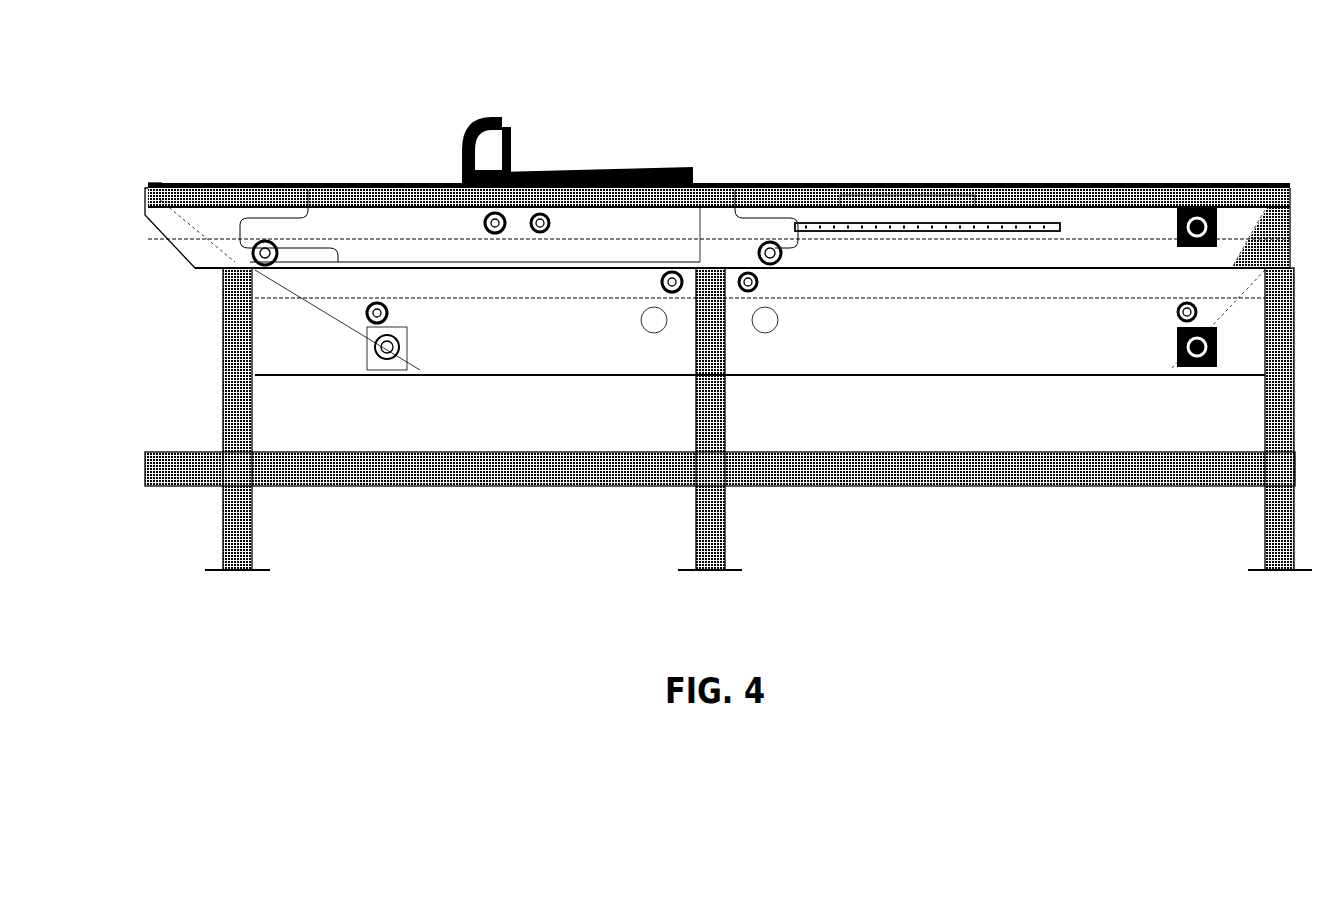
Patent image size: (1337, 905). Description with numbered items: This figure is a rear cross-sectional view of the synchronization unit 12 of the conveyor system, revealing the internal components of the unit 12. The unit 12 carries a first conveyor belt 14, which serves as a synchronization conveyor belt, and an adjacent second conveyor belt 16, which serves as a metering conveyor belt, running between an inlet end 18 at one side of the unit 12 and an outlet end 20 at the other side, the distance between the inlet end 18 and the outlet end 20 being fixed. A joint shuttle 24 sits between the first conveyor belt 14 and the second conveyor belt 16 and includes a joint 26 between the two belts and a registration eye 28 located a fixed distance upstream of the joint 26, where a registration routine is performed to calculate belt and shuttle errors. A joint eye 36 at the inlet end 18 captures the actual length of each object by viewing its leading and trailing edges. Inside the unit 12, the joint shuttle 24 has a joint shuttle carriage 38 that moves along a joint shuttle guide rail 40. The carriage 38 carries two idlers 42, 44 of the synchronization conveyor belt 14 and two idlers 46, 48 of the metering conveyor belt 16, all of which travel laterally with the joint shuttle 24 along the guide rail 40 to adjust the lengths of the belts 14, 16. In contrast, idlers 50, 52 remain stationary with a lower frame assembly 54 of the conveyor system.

The synchronization unit 12 is at (843, 112).
The first conveyor belt 14 is at (315, 183).
The second conveyor belt 16 is at (988, 185).
The inlet end 18 is at (148, 190).
The outlet end 20 is at (1282, 182).
The joint shuttle 24 is at (613, 132).
The joint 26 is at (538, 177).
The registration eye 28 is at (467, 179).
The joint eye 36 is at (151, 182).
The joint shuttle carriage 38 is at (700, 202).
The joint shuttle guide rail 40 is at (859, 232).
The idler 42 is at (267, 265).
The idler 44 is at (496, 233).
The idler 46 is at (541, 232).
The idler 48 is at (778, 262).
The idler 50 is at (677, 292).
The idler 52 is at (749, 292).
The lower frame assembly 54 is at (1284, 395).